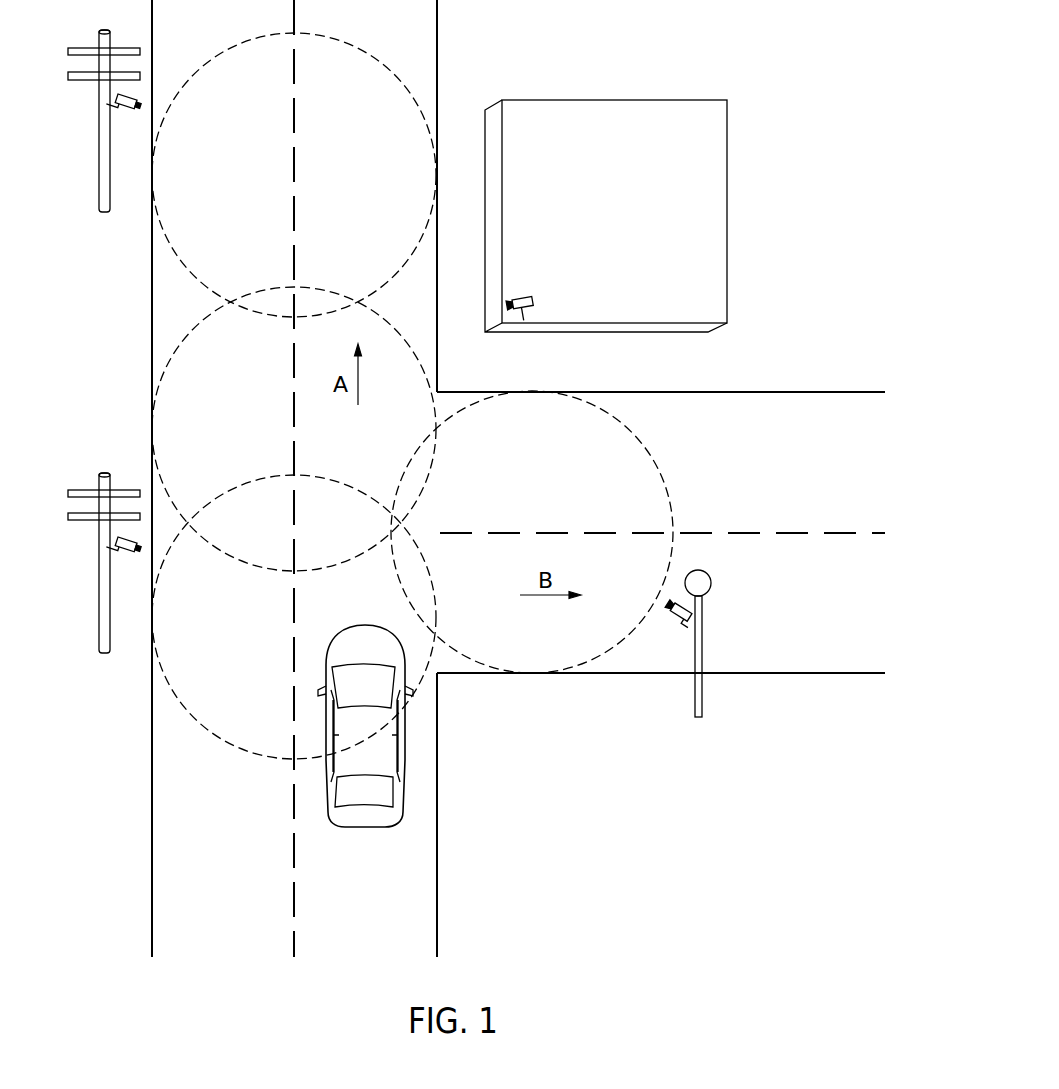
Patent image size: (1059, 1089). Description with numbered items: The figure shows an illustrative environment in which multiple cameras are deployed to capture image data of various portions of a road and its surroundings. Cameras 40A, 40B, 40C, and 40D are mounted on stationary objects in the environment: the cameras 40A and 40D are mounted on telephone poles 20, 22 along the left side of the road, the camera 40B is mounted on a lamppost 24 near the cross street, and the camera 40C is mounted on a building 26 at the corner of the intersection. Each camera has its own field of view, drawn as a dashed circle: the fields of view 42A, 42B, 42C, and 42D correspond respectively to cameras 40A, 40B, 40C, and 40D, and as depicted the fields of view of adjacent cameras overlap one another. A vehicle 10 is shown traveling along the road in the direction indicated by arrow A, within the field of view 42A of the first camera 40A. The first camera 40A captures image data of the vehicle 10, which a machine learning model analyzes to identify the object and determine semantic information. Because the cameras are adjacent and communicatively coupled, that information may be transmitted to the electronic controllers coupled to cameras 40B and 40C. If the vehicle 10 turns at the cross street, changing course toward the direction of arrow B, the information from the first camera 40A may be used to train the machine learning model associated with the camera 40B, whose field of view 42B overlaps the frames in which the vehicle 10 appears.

The vehicle 10 is at (360, 828).
The telephone pole 20 is at (99, 590).
The telephone pole 22 is at (99, 146).
The lamppost 24 is at (704, 660).
The building 26 is at (728, 302).
The first camera 40A is at (114, 543).
The camera 40B is at (672, 624).
The camera 40C is at (532, 302).
The camera 40D is at (114, 102).
The field of view 42A is at (222, 747).
The field of view 42B is at (658, 458).
The field of view 42C is at (166, 376).
The field of view 42D is at (172, 252).